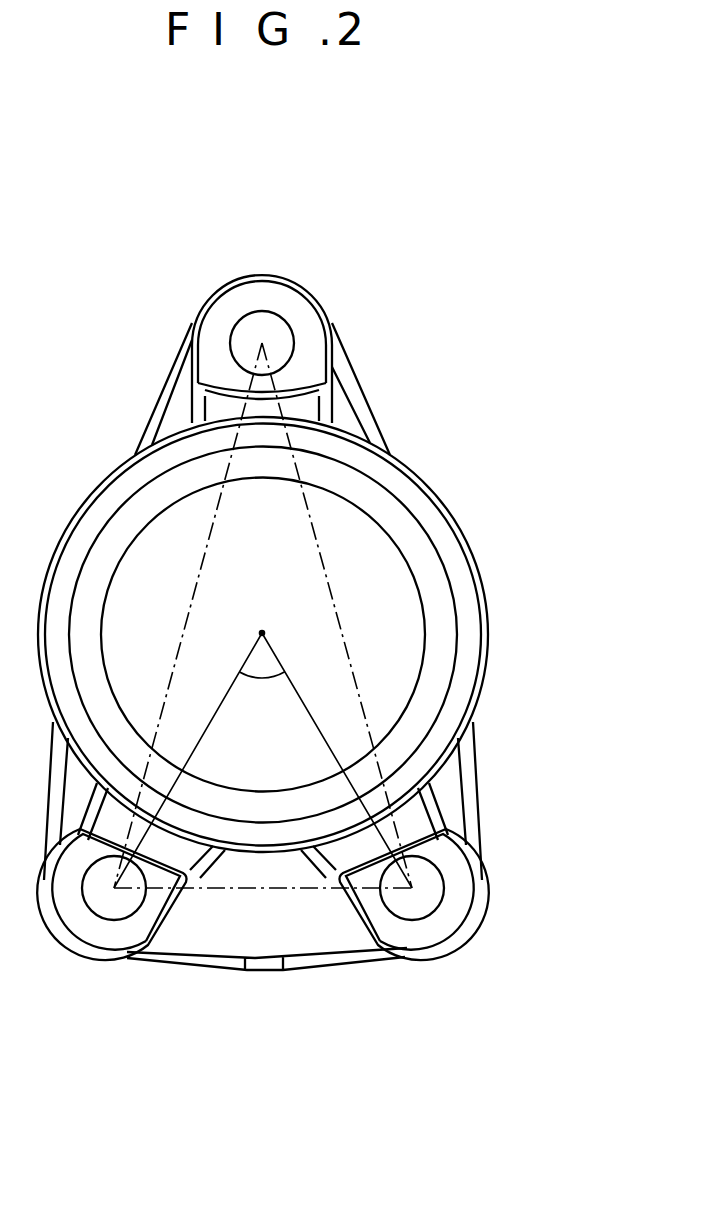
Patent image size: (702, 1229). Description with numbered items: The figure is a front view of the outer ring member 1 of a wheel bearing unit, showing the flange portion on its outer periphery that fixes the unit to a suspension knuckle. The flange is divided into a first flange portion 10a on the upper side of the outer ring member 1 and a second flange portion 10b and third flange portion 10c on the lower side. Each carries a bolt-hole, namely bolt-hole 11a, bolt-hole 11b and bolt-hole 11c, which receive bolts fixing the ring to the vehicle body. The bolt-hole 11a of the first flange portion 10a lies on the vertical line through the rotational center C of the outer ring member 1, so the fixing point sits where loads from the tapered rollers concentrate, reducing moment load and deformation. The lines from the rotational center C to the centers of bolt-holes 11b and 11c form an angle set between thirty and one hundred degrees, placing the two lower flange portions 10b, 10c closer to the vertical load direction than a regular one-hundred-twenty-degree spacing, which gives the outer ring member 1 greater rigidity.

The outer ring member 1 is at (489, 384).
The first flange portion 10a is at (274, 296).
The second flange portion 10b is at (105, 932).
The third flange portion 10c is at (428, 932).
The bolt-hole 11a is at (277, 333).
The bolt-hole 11b is at (122, 907).
The bolt-hole 11c is at (428, 890).
The rotational center C is at (263, 633).